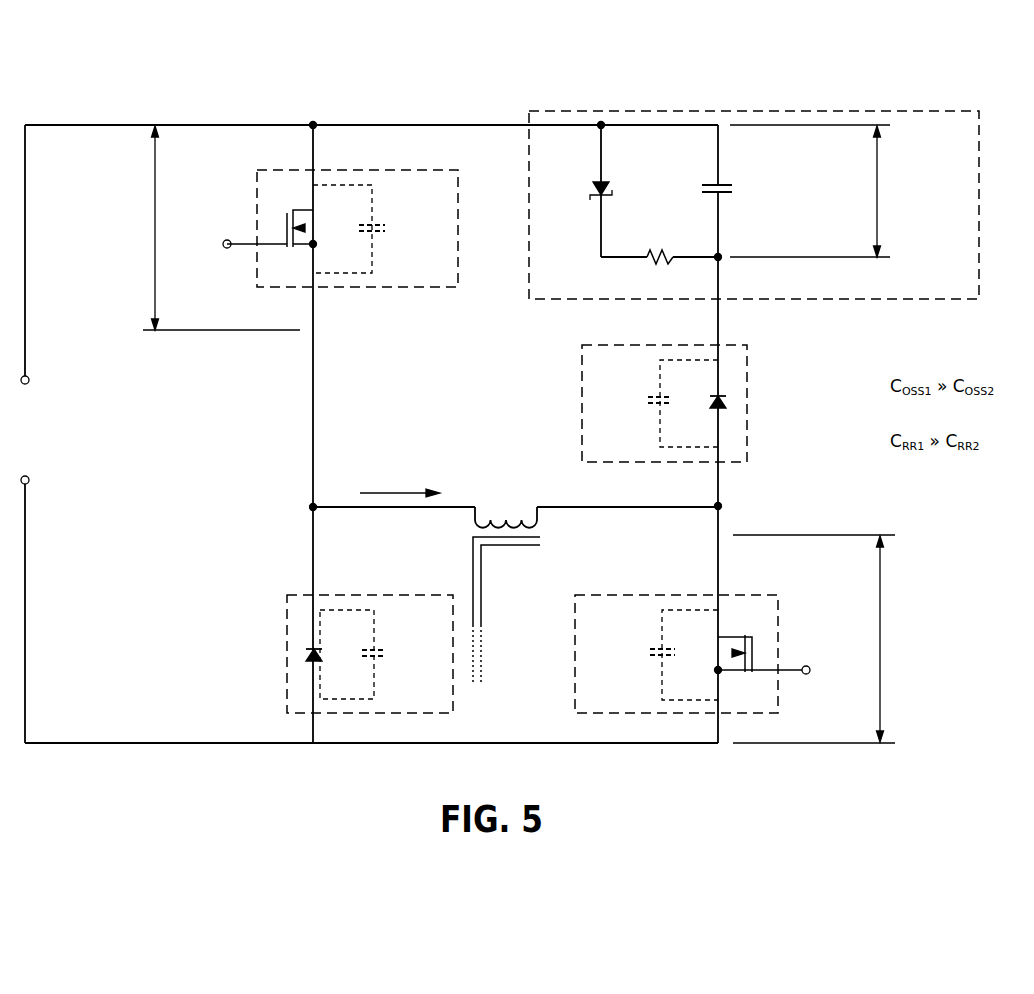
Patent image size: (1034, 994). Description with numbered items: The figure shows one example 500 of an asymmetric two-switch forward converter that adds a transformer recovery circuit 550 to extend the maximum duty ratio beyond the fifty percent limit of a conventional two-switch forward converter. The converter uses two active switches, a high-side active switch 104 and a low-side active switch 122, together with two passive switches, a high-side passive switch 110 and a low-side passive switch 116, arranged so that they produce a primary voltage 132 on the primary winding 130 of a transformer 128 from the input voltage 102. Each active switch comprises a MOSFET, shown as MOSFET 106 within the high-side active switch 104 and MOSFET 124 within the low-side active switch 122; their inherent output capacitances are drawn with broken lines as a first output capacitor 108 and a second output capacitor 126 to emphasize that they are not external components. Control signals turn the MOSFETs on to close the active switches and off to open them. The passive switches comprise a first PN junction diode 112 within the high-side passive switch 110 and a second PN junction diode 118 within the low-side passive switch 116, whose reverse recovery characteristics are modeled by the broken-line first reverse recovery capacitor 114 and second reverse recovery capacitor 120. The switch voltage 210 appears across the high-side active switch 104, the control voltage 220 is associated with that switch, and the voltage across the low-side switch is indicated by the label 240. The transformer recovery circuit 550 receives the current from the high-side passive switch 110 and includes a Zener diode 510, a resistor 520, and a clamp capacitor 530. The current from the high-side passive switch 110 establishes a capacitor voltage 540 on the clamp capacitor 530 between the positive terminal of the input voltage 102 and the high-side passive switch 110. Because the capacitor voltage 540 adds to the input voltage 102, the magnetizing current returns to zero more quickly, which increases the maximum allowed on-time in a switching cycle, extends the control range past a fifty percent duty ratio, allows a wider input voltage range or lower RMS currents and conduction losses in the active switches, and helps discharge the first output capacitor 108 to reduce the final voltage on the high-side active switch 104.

The input voltage VIN 102 is at (43, 421).
The active switch Q1 104 is at (257, 170).
The MOSFET 106 is at (305, 210).
The capacitor COSS1 108 is at (376, 218).
The passive switch D1 110 is at (748, 381).
The PN junction diode 112 is at (712, 400).
The capacitor CRR1 114 is at (656, 394).
The passive switch D2 116 is at (287, 595).
The PN junction diode 118 is at (324, 656).
The capacitor CRR2 120 is at (380, 644).
The active switch Q2 122 is at (779, 582).
The MOSFET 124 is at (724, 634).
The capacitor COSS2 126 is at (654, 642).
The transformer T1 128 is at (490, 577).
The primary winding 130 is at (545, 524).
The voltage VP 132 is at (505, 474).
The voltage VQ1 210 is at (130, 226).
The control voltage VGS1 220 is at (378, 482).
The voltage VQ2 across second switch 240 is at (895, 626).
The asymmetric two-switch forward converter 500 is at (460, 91).
The Zener diode VR1 510 is at (595, 180).
The resistor R1 520 is at (667, 246).
The capacitor C3 530 is at (710, 180).
The voltage VC3 540 is at (890, 178).
The transformer recovery circuit 550 is at (966, 111).